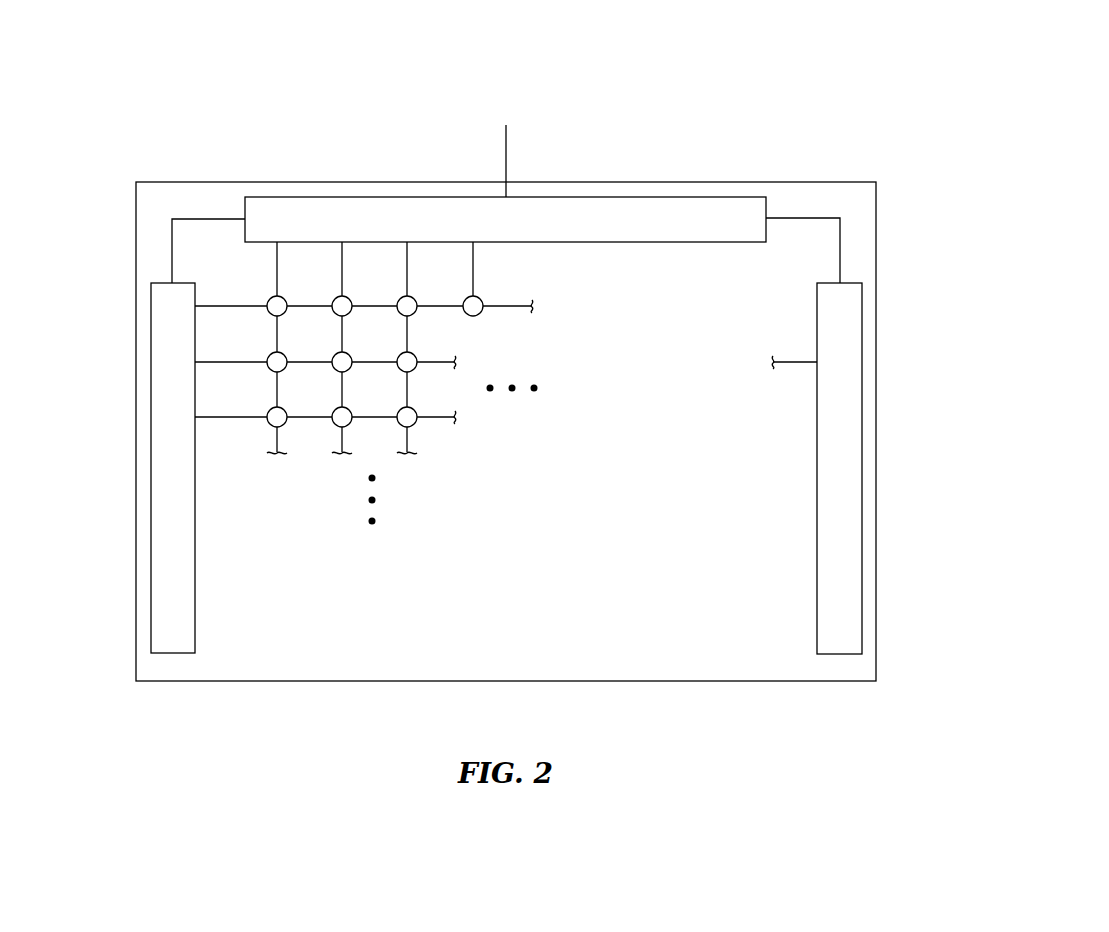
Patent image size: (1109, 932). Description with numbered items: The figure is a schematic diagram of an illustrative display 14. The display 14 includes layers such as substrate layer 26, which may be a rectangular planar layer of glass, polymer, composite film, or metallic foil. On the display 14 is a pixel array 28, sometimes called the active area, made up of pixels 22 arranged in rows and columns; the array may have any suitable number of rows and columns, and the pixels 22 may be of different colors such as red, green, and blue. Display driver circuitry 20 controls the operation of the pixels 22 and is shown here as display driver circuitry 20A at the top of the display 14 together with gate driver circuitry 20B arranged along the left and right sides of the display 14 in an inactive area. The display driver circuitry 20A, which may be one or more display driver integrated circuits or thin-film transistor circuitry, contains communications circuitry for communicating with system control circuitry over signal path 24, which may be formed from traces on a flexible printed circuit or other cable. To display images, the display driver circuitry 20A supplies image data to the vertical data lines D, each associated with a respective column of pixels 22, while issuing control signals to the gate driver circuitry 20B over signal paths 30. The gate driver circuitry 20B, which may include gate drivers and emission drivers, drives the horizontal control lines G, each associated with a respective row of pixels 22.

The display 14 is at (757, 73).
The display driver circuitry 20 is at (291, 168).
The display driver circuitry 20A is at (405, 197).
The gate driver circuitry 20B is at (151, 519).
The pixels 22 is at (482, 300).
The signal path 24 is at (506, 142).
The substrate layer 26 is at (800, 182).
The pixel array 28 is at (443, 465).
The signal paths 30 is at (172, 243).